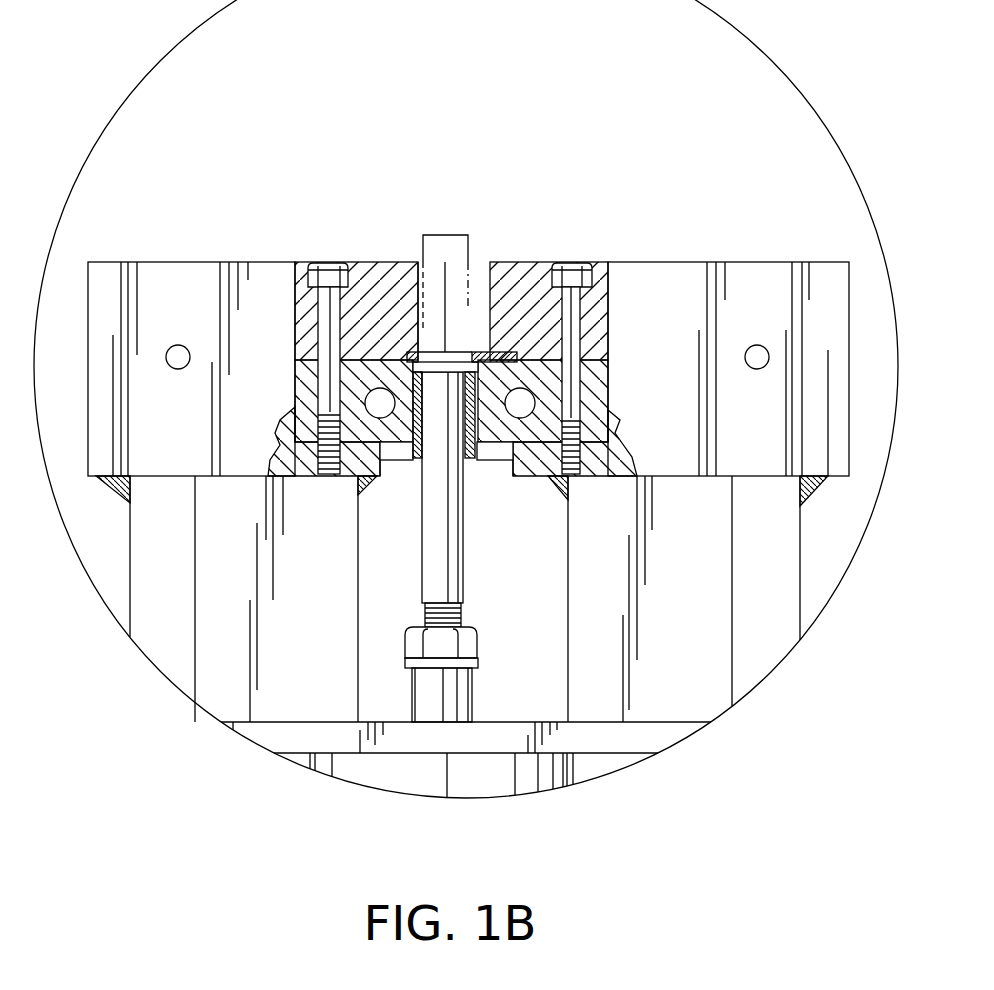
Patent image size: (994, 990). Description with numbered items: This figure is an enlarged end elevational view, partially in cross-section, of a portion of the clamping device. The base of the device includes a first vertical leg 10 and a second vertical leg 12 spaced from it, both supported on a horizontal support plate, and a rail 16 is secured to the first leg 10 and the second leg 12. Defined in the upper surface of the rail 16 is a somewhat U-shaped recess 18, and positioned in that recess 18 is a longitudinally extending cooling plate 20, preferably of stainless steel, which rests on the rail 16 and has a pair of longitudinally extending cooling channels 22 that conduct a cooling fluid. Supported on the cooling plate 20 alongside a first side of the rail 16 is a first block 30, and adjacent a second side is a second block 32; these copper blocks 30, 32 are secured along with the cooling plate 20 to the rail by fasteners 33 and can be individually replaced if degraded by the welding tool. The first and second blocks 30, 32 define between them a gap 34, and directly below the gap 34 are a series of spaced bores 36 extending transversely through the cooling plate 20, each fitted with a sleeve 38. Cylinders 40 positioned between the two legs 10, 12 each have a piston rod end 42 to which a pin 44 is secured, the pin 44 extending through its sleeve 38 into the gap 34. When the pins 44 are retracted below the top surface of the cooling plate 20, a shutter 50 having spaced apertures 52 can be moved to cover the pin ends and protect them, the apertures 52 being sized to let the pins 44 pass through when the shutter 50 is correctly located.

The first vertical leg 10 is at (762, 530).
The second vertical leg 12 is at (155, 528).
The rail 16 is at (118, 398).
The U-shaped recess 18 is at (419, 276).
The cooling plate 20 is at (456, 411).
The cooling channels 22 is at (375, 405).
The first block 30 is at (525, 274).
The second block 32 is at (380, 276).
The bolt 33 is at (583, 264).
The gap 34 is at (460, 276).
The bores 36 is at (432, 443).
The sleeve 38 is at (478, 448).
The cylinders 40 is at (467, 775).
The piston rod end 42 is at (452, 685).
The pin 44 is at (476, 432).
The shutter 50 is at (495, 352).
The apertures 52 is at (466, 350).